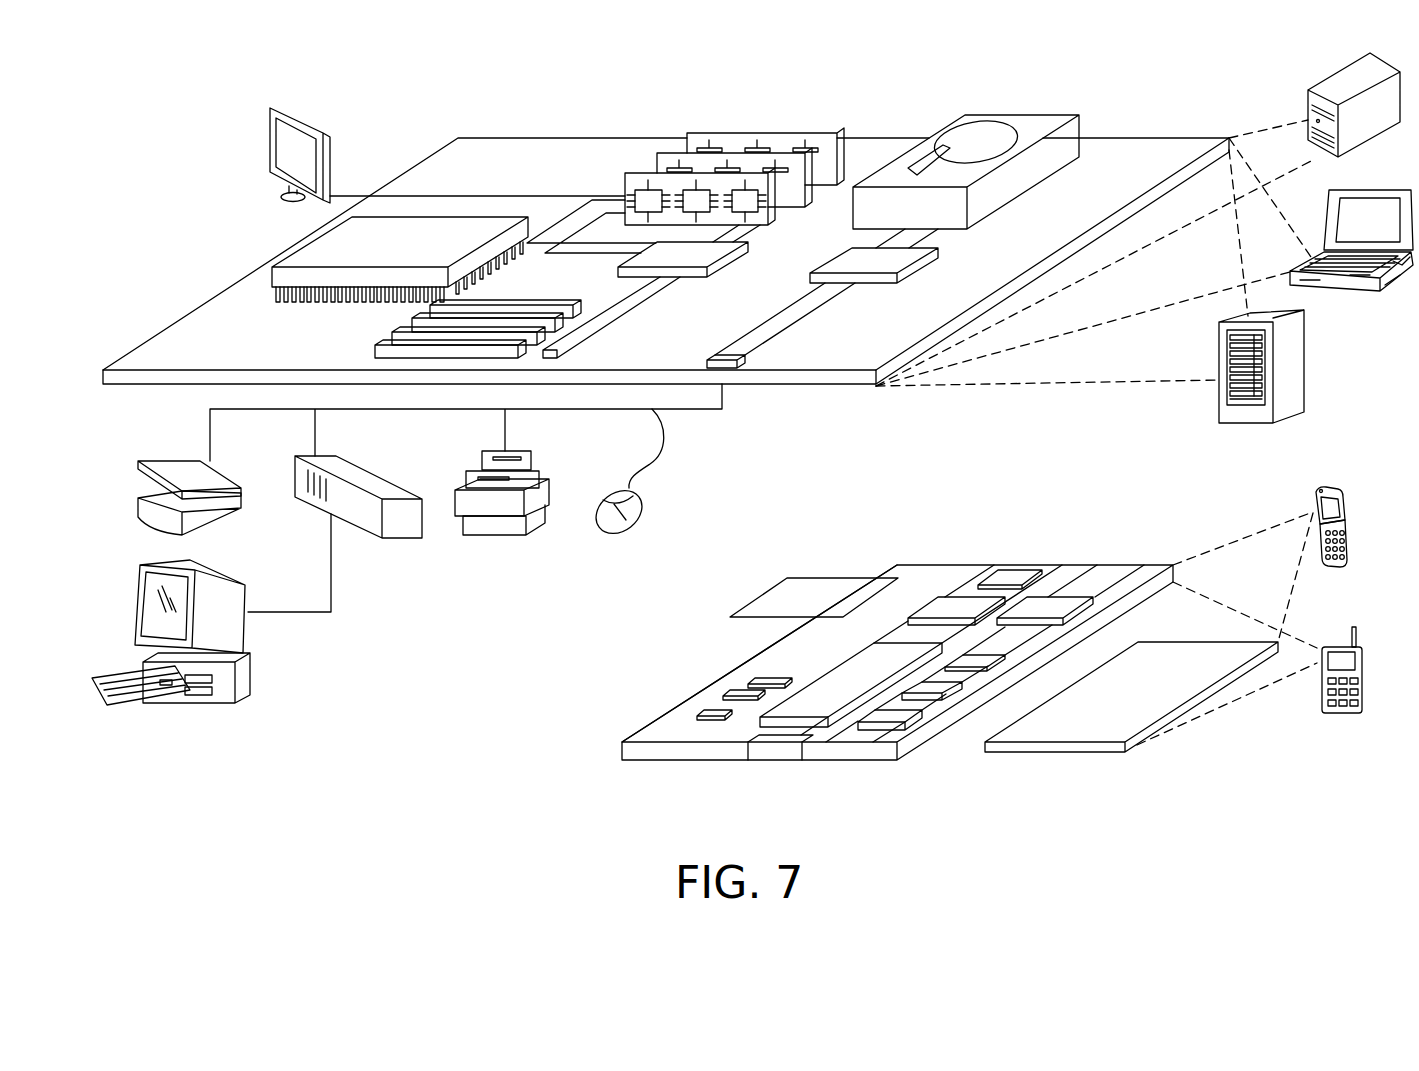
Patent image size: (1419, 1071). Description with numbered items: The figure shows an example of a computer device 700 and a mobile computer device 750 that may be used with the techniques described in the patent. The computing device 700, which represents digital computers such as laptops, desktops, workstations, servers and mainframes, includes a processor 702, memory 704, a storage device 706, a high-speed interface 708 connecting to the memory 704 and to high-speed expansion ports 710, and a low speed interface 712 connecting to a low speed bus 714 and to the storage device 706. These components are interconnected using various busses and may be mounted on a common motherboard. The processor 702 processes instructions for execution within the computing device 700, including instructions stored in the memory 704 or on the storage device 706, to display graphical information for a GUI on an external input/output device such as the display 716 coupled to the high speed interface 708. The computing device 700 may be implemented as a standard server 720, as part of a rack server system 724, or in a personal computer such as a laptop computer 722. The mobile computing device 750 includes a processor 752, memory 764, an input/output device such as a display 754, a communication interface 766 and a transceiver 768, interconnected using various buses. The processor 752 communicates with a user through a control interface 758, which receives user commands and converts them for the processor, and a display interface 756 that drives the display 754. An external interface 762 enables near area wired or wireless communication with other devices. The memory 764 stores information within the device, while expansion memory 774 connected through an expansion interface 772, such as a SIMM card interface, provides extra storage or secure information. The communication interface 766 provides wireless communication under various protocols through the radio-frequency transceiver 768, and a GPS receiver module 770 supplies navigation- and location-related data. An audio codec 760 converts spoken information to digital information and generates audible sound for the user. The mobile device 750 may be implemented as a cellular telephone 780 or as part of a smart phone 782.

The computing device 700 is at (410, 87).
The processor 702 is at (300, 246).
The memory 704 is at (768, 133).
The storage device 706 is at (1008, 117).
The high-speed interface 708 is at (703, 262).
The high-speed expansion ports 710 is at (402, 331).
The low speed interface 712 is at (850, 259).
The low speed bus 714 is at (728, 355).
The display 716 is at (273, 108).
The standard server 720 is at (1320, 82).
The laptop computer 722 is at (1385, 189).
The rack server system 724 is at (1306, 374).
The mobile computing device 750 is at (579, 766).
The processor 752 is at (825, 690).
The display 754 is at (1172, 657).
The display interface 756 is at (905, 718).
The control interface 758 is at (940, 688).
The audio codec 760 is at (985, 660).
The external interface 762 is at (778, 750).
The memory 764 is at (722, 698).
The communication interface 766 is at (960, 600).
The transceiver 768 is at (1050, 600).
The GPS receiver module 770 is at (1010, 580).
The expansion interface 772 is at (880, 578).
The expansion memory 774 is at (787, 578).
The cellular telephone 780 is at (1318, 490).
The smart phone 782 is at (1336, 647).